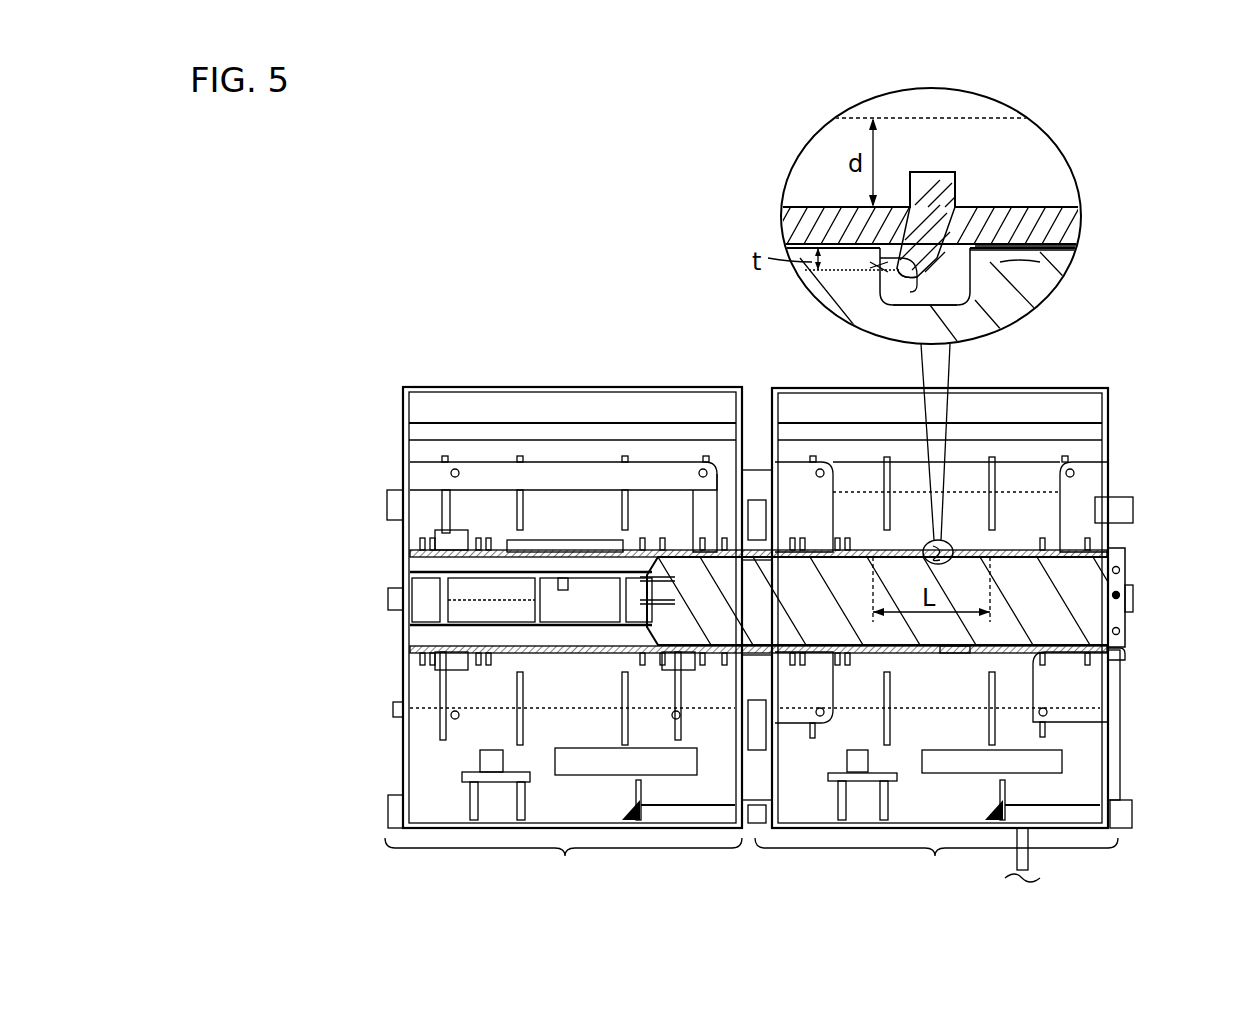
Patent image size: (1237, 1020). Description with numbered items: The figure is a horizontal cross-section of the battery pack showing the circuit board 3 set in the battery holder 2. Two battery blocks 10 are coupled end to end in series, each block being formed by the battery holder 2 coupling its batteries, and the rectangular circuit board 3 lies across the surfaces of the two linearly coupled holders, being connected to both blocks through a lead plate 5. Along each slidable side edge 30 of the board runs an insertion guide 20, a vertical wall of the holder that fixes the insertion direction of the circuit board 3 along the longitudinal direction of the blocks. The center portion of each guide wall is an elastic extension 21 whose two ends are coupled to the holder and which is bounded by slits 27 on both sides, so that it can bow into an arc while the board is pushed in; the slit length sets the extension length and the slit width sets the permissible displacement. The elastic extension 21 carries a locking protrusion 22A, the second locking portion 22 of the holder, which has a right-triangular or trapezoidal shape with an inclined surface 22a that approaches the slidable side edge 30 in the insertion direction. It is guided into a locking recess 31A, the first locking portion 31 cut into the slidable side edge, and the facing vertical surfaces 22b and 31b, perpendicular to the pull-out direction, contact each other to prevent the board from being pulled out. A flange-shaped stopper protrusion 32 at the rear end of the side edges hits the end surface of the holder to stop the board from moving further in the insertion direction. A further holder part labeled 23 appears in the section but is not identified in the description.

The battery holder 2 is at (482, 368).
The circuit board 3 is at (1058, 270).
The lead plate 5 is at (573, 480).
The battery block 10 is at (751, 864).
The insertion guide 20 is at (710, 500).
The elastic extension 21 is at (828, 212).
The second locking portion 22 is at (904, 340).
The locking protrusion 22A is at (900, 305).
The inclined surface 22a is at (1008, 288).
The vertical surface 22b is at (882, 286).
The case wall 23 is at (1045, 452).
The slit 27 is at (988, 124).
The slidable side edge 30 is at (1000, 243).
The first locking portion 31 is at (997, 323).
The locking recess 31A is at (975, 313).
The vertical surface 31b is at (932, 230).
The stopper protrusion 32 is at (1125, 656).